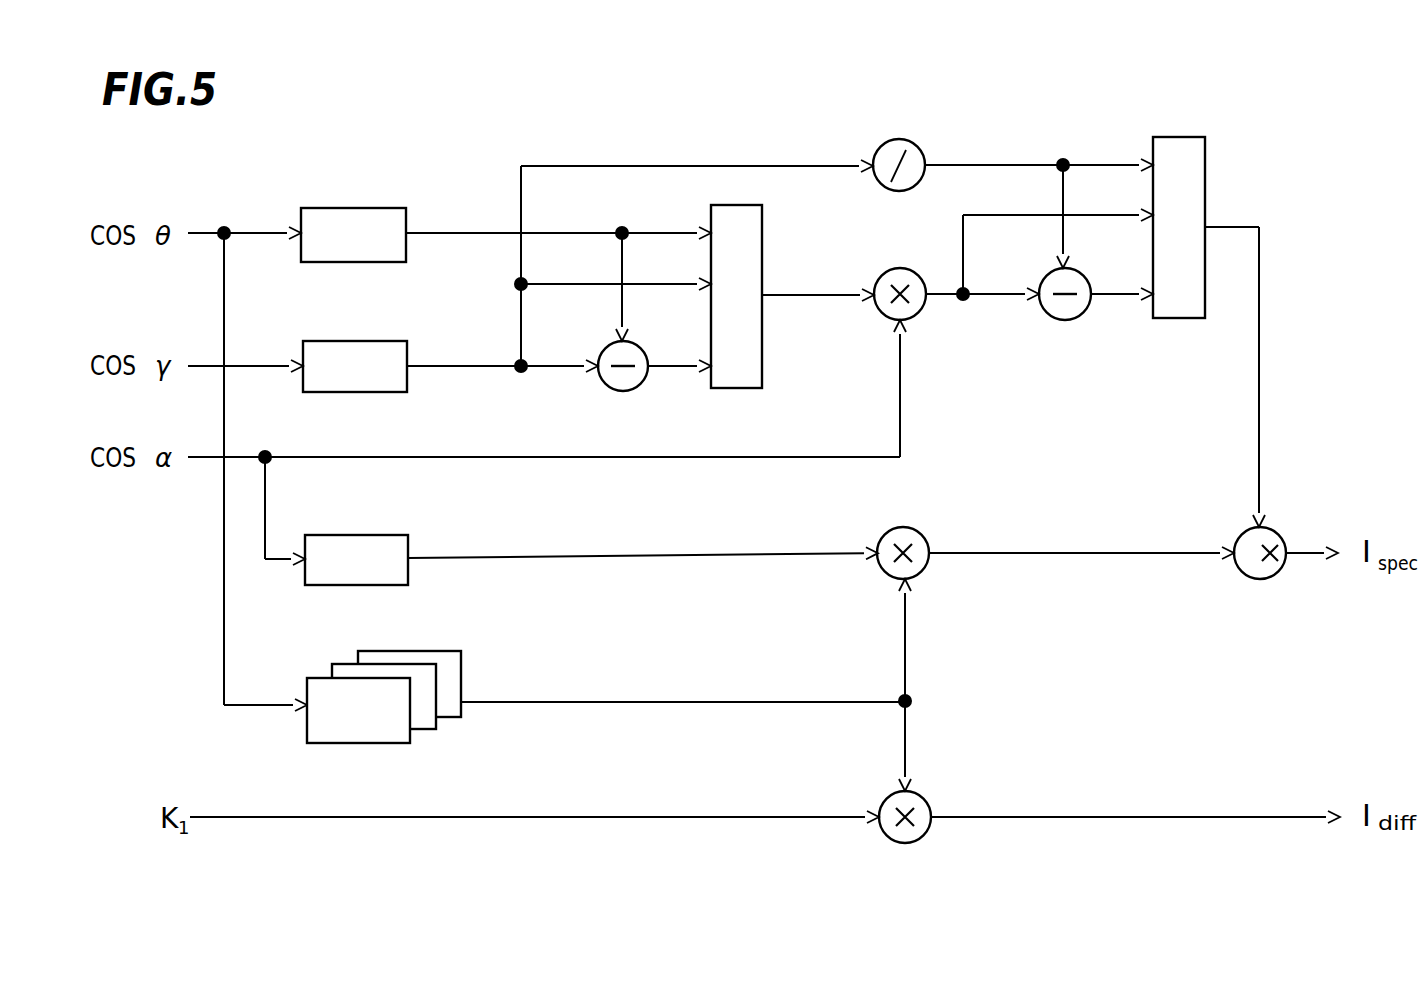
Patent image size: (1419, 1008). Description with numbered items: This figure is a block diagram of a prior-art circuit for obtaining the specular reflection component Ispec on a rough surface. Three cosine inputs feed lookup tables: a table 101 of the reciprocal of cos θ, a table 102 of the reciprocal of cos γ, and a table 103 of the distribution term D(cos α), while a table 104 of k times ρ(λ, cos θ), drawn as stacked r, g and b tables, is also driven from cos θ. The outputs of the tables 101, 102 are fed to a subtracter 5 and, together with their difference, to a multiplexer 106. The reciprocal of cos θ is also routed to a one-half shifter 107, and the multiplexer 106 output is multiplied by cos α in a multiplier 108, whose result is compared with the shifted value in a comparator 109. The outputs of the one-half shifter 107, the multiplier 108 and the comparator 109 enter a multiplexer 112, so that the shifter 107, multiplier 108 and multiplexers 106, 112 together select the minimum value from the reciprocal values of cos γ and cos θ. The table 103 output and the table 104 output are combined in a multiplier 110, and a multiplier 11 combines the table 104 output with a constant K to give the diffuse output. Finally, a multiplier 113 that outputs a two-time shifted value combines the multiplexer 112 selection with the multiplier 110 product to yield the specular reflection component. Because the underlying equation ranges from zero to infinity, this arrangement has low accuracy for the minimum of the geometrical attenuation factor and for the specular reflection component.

The table of 1/cos θ 101 is at (360, 208).
The table of 1/cos γ 102 is at (362, 341).
The table of D(cos α) 103 is at (364, 535).
The table of k×ρ(λ, cos θ) 104 is at (420, 651).
The subtracter 5 is at (628, 391).
The multiplexer 106 is at (735, 205).
The ½ shifter 107 is at (914, 142).
The multiplier 108 is at (917, 313).
The comparator 109 is at (1082, 313).
The multiplier 110 is at (920, 532).
The multiplier 11 is at (922, 796).
The multiplexer 112 is at (1178, 137).
The multiplier that outputs two-time shifted value 113 is at (1242, 576).